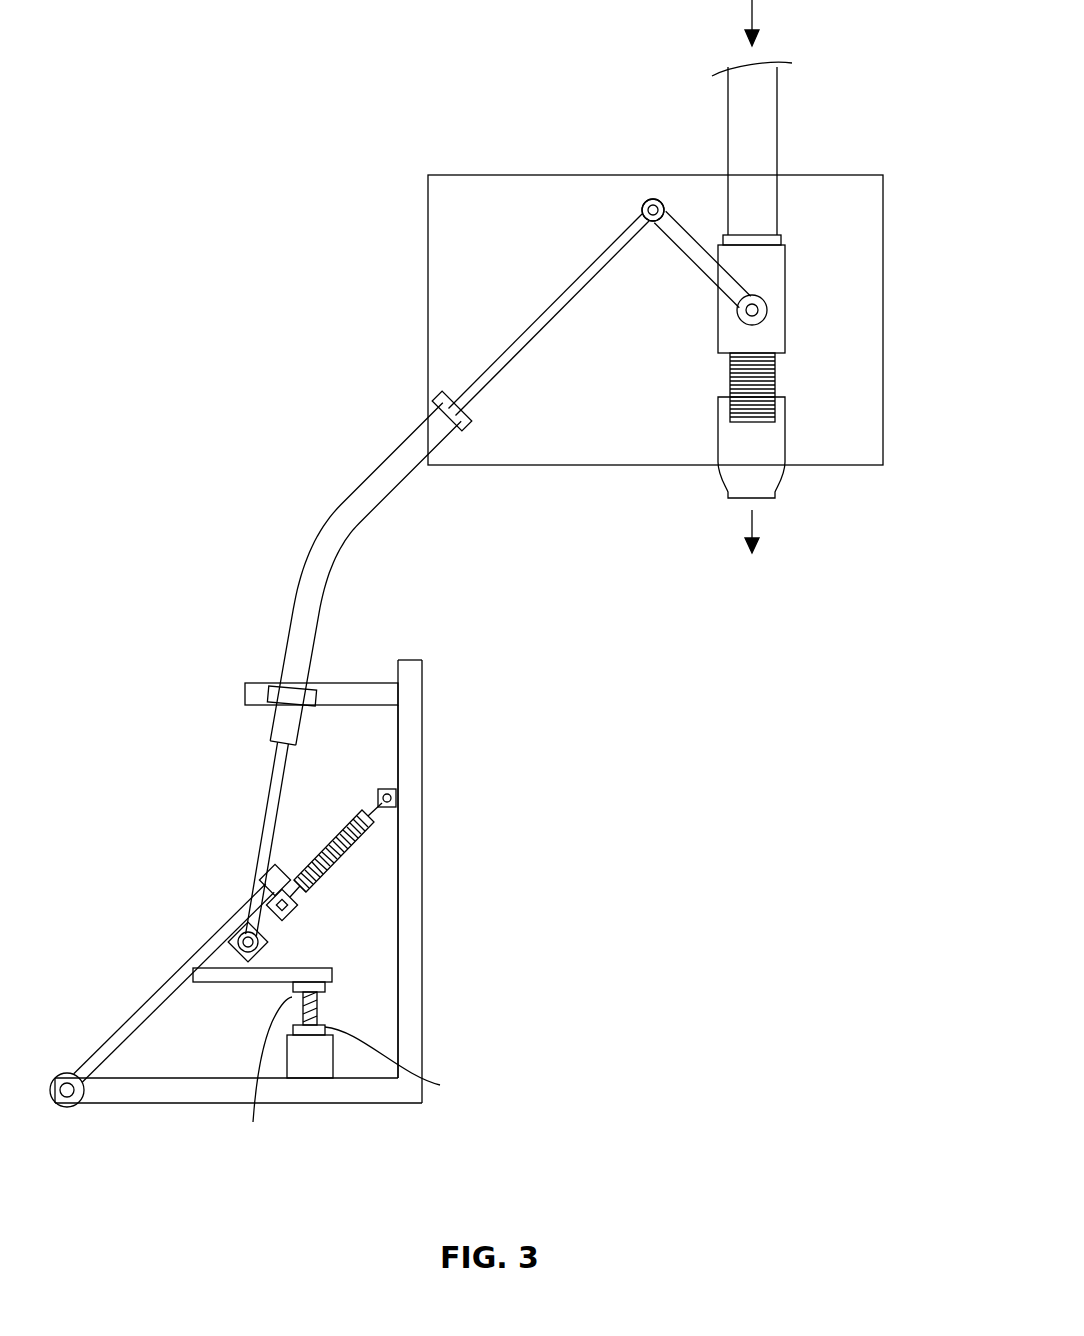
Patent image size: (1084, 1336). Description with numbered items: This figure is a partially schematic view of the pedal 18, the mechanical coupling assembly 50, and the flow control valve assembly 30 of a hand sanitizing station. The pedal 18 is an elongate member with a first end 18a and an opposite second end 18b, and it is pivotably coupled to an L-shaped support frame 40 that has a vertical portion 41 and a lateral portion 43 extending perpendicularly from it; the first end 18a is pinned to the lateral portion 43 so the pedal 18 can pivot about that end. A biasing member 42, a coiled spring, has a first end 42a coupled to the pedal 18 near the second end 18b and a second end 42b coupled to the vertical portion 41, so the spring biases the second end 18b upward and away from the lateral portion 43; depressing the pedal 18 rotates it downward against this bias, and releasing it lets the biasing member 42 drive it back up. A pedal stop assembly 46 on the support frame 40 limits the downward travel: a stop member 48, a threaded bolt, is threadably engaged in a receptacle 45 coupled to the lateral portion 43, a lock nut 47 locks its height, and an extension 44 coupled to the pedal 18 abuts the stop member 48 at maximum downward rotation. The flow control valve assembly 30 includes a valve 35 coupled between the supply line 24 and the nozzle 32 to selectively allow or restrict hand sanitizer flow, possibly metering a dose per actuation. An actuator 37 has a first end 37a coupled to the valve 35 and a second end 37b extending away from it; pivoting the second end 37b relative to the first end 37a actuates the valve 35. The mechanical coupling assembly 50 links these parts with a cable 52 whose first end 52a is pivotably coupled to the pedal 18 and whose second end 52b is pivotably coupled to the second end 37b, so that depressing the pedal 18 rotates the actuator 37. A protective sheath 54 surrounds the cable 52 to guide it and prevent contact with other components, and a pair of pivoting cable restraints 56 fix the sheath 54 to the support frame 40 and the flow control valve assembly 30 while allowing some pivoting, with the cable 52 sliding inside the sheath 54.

The pedal 18 is at (160, 988).
The first end 18a is at (78, 1056).
The second end 18b is at (292, 860).
The supply line 24 is at (778, 104).
The flow control valve assembly 30 is at (885, 190).
The nozzle 32 is at (786, 488).
The valve 35 is at (786, 280).
The actuator 37 is at (680, 268).
The first end 37a is at (772, 328).
The second end 37b is at (654, 190).
The support frame 40 is at (434, 667).
The vertical portion 41 is at (422, 1045).
The biasing member 42 is at (360, 842).
The first end 42a is at (312, 905).
The second end 42b is at (404, 784).
The lateral portion 43 is at (150, 1103).
The extension 44 is at (225, 983).
The receptacle 45 is at (338, 1073).
The pedal stop assembly 46 is at (358, 1006).
The lock nut 47 is at (406, 1066).
The stop member 48 is at (252, 1073).
The mechanical coupling assembly 50 is at (246, 492).
The cable 52 is at (273, 768).
The first end 52a is at (272, 942).
The second end 52b is at (626, 212).
The protective sheath 54 is at (365, 532).
The pivoting cable restraints 56 is at (430, 393).